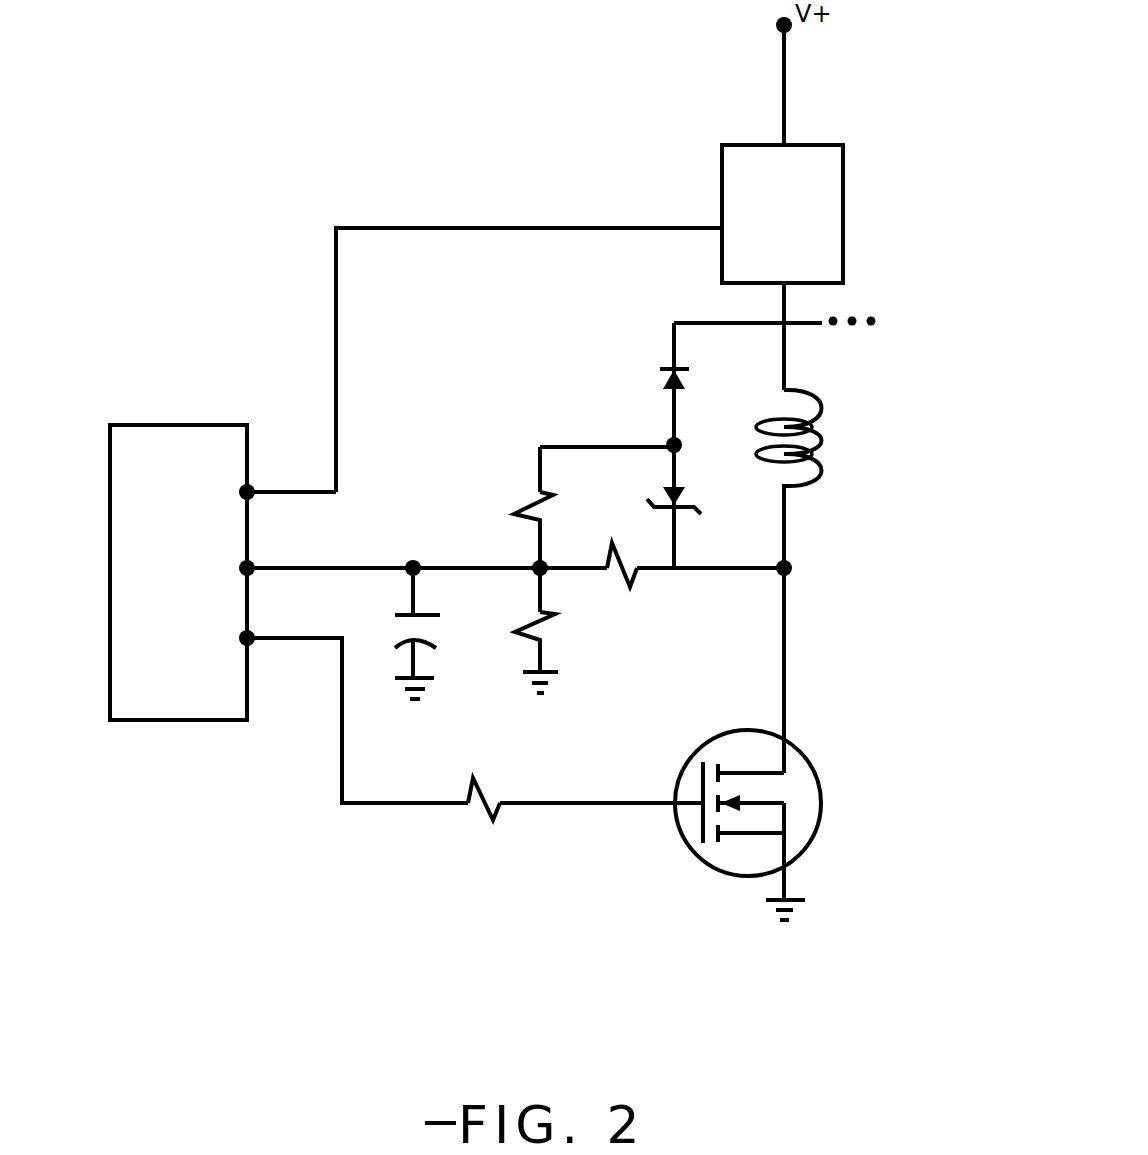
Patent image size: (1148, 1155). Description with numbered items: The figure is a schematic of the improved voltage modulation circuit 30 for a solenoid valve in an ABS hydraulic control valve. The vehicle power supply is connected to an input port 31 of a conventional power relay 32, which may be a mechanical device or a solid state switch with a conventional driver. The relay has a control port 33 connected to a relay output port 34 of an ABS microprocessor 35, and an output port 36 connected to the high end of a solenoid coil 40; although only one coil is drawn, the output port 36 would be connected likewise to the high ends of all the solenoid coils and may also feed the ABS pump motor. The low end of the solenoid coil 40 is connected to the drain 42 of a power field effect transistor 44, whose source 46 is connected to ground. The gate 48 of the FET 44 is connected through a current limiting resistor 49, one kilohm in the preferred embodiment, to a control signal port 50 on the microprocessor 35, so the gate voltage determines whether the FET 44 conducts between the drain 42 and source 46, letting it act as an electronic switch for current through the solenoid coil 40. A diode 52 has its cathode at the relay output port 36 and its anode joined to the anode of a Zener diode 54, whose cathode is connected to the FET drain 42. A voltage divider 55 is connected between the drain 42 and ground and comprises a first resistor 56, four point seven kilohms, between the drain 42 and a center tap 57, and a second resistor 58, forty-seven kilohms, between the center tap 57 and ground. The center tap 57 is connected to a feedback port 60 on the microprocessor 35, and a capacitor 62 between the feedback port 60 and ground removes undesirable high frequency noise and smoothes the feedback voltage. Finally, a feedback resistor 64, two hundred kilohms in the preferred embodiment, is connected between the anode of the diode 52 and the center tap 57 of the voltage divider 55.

The voltage modulation circuit 30 is at (860, 70).
The input port 31 is at (786, 140).
The power relay 32 is at (820, 167).
The control port 33 is at (721, 226).
The relay output port 34 is at (252, 497).
The ABS microprocessor 35 is at (162, 423).
The output port 36 is at (790, 285).
The solenoid coil 40 is at (812, 428).
The drain 42 is at (788, 743).
The power field effect transistor 44 is at (803, 798).
The source 46 is at (787, 865).
The gate 48 is at (667, 805).
The current limiting resistor 49 is at (495, 778).
The control signal port 50 is at (252, 644).
The diode 52 is at (680, 381).
The Zener diode 54 is at (685, 502).
The voltage divider 55 is at (618, 608).
The first resistor 56 is at (633, 575).
The center tap 57 is at (537, 565).
The second resistor 58 is at (528, 630).
The feedback port 60 is at (252, 573).
The capacitor 62 is at (436, 617).
The feedback resistor 64 is at (529, 500).